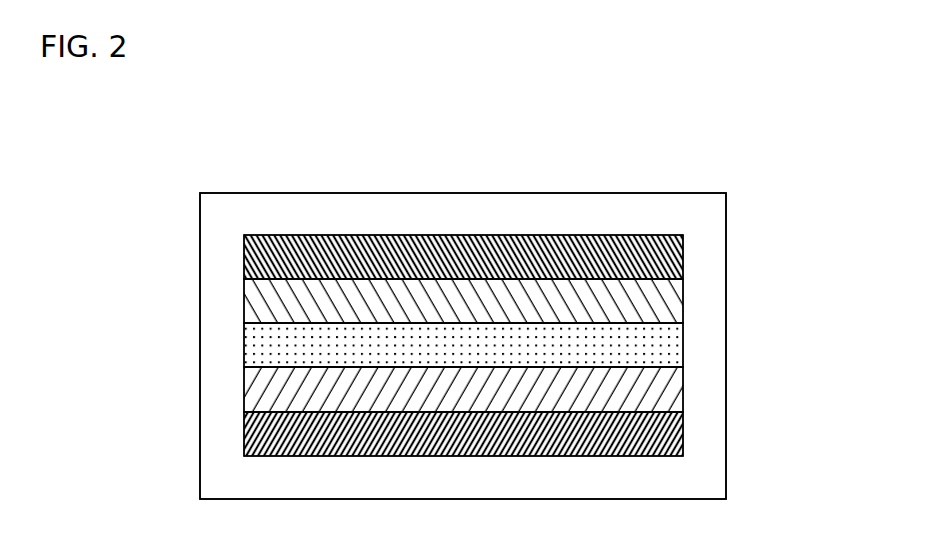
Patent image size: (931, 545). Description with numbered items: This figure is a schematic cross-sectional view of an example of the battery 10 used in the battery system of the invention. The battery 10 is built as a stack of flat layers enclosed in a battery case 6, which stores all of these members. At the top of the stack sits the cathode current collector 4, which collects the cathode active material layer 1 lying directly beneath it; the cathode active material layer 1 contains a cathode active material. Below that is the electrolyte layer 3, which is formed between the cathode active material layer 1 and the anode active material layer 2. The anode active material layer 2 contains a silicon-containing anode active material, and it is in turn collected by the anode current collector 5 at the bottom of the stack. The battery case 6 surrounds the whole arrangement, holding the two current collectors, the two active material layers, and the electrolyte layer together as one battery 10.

The battery 10 is at (711, 148).
The cathode current collector 4 is at (672, 250).
The cathode active material layer 1 is at (668, 297).
The electrolyte layer 3 is at (668, 337).
The anode active material layer 2 is at (668, 382).
The anode current collector 5 is at (670, 426).
The battery case 6 is at (702, 470).